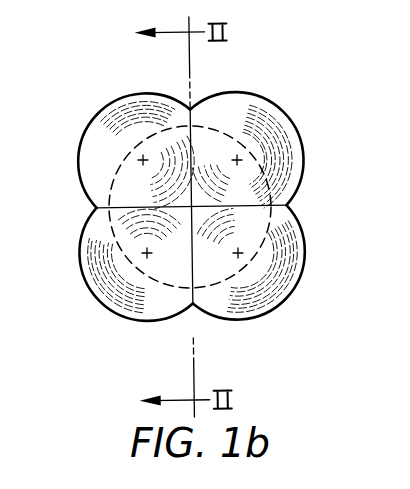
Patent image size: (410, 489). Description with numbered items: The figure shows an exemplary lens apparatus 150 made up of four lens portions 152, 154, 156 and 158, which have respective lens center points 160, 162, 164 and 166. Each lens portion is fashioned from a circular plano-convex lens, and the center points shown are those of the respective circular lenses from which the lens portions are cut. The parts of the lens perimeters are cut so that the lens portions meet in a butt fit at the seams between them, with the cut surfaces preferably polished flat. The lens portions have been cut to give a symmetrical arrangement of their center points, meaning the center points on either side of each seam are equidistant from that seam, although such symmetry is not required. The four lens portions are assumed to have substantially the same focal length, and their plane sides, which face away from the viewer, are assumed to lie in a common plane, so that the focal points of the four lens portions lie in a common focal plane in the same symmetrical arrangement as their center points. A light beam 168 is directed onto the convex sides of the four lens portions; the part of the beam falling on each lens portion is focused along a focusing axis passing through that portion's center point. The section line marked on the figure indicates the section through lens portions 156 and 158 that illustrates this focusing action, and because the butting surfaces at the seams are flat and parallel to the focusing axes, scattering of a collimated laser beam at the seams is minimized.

The lens apparatus 150 is at (284, 75).
The lens portion 152 is at (287, 113).
The lens portion 154 is at (287, 301).
The lens portion 156 is at (140, 323).
The lens portion 158 is at (113, 98).
The lens center point 160 is at (238, 160).
The lens center point 162 is at (238, 253).
The lens center point 164 is at (147, 254).
The lens center point 166 is at (143, 158).
The light beam 168 is at (222, 130).